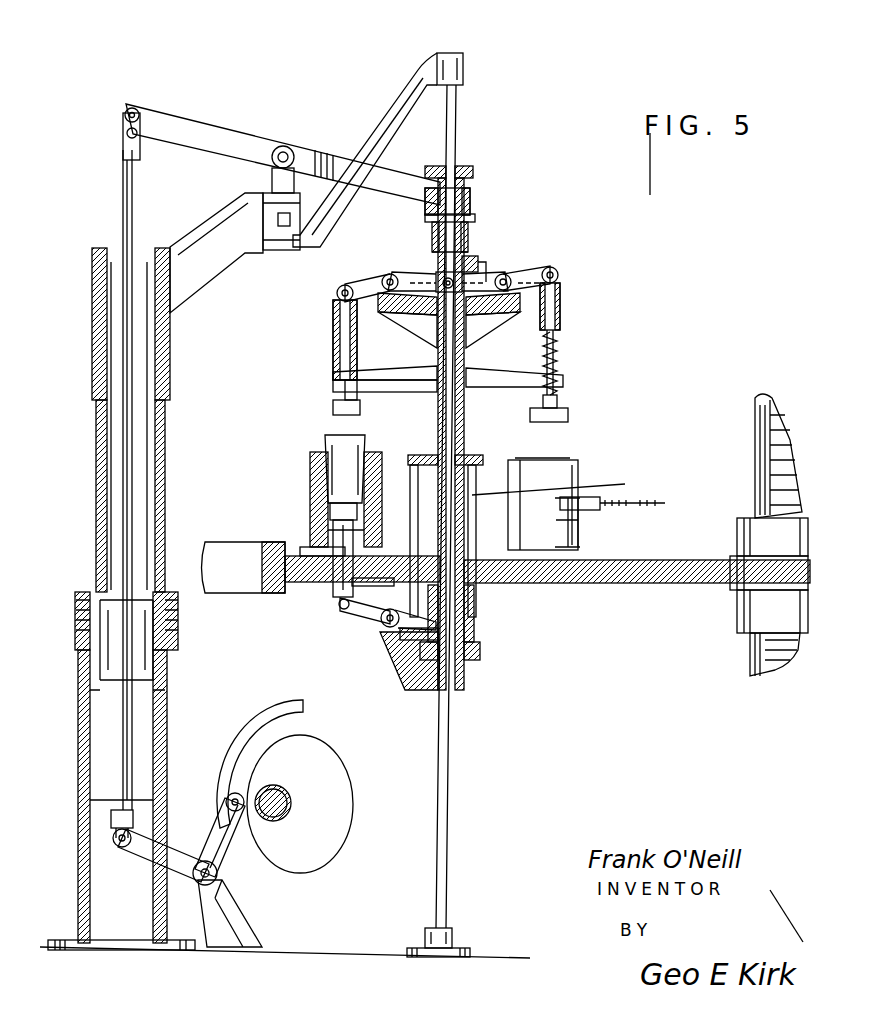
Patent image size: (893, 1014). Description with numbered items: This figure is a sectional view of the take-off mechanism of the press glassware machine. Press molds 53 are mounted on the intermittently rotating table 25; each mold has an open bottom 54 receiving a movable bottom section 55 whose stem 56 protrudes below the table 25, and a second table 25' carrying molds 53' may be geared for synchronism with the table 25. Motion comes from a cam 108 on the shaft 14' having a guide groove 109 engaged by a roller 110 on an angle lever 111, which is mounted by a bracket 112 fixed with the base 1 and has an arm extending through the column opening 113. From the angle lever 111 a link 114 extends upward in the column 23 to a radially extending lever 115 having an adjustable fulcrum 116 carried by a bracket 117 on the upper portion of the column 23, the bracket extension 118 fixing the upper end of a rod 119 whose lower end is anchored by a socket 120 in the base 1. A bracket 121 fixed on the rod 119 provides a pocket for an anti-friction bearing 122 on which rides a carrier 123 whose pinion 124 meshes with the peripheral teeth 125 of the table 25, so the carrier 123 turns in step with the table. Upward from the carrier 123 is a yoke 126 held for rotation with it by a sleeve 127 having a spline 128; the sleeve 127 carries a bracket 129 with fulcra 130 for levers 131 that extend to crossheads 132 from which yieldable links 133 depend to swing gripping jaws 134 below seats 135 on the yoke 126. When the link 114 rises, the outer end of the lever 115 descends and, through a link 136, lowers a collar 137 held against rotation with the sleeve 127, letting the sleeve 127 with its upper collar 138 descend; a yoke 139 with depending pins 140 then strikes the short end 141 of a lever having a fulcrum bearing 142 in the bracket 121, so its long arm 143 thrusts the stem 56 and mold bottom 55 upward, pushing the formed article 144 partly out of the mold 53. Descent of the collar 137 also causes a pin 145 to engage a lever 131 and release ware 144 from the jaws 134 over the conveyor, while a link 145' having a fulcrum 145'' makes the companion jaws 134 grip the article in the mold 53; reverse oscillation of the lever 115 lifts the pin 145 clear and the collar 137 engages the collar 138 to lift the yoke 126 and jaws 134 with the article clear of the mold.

The base 1 is at (488, 955).
The column 23 is at (78, 765).
The link 114 is at (133, 447).
The column opening 113 is at (150, 876).
The angle lever 111 is at (216, 872).
The roller 110 is at (244, 795).
The bracket 112 is at (252, 929).
The cam 108 is at (282, 872).
The shaft 14' is at (297, 798).
The guide groove 109 is at (306, 707).
The lever 115 is at (258, 134).
The adjustable fulcrum 116 is at (270, 168).
The bracket 117 is at (230, 278).
The extension 118 is at (455, 52).
The rod 119 is at (460, 112).
The collar 138 is at (475, 172).
The sleeve 127 is at (466, 430).
The link 136 is at (428, 207).
The collar 137 is at (432, 232).
The fulcrum 145'' is at (496, 239).
The pin 145 is at (505, 238).
The link 145' is at (591, 256).
The fulcra 130 is at (395, 275).
The levers 131 is at (372, 280).
The crossheads 132 is at (333, 310).
The yieldable links 133 is at (560, 362).
The gripping jaws 134 is at (333, 406).
The yoke 126 is at (333, 378).
The seats 135 is at (358, 404).
The bracket 129 is at (480, 338).
The yoke 139 is at (485, 458).
The depending pins 140 is at (438, 545).
The spline 128 is at (580, 468).
The molds 53' is at (591, 522).
The table 25 is at (321, 549).
The open bottoms 54 is at (308, 545).
The press molds 53 is at (324, 499).
The article of glassware 144 is at (368, 448).
The plungers or movable bottom sections 55 is at (357, 512).
The stems 56 is at (330, 597).
The teeth 125 is at (358, 586).
The long arm 143 is at (338, 610).
The fulcrum bearing 142 is at (380, 626).
The short end 141 is at (396, 641).
The bracket 121 is at (408, 692).
The carrier 123 is at (472, 628).
The pinion 124 is at (488, 578).
The anti-friction bearing 122 is at (478, 656).
The second table 25' is at (637, 535).
The socket 120 is at (452, 936).